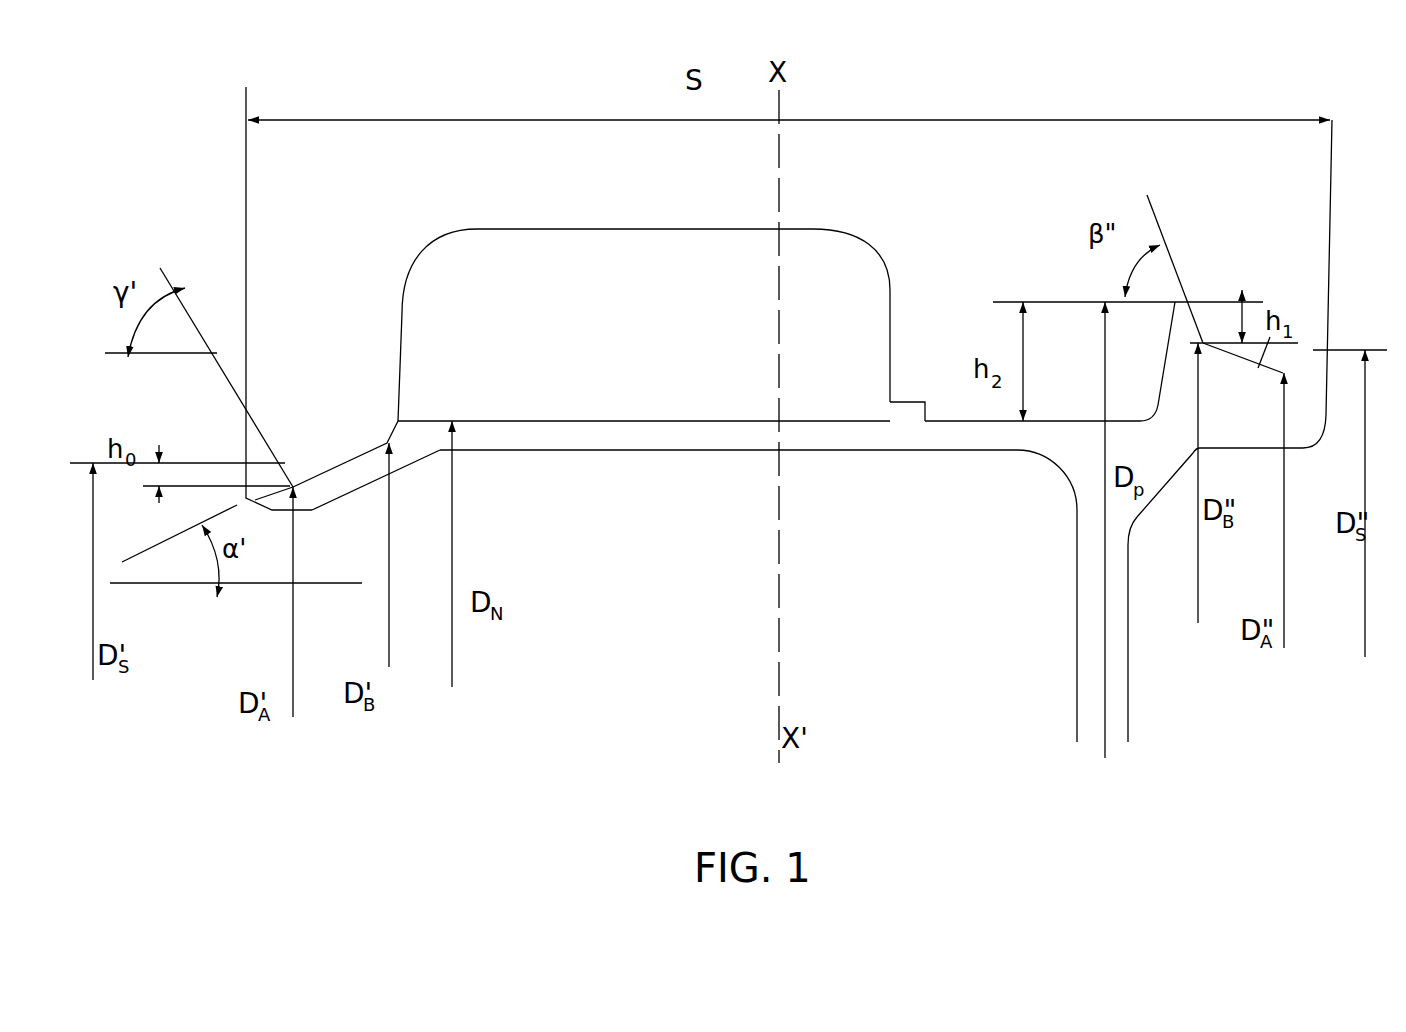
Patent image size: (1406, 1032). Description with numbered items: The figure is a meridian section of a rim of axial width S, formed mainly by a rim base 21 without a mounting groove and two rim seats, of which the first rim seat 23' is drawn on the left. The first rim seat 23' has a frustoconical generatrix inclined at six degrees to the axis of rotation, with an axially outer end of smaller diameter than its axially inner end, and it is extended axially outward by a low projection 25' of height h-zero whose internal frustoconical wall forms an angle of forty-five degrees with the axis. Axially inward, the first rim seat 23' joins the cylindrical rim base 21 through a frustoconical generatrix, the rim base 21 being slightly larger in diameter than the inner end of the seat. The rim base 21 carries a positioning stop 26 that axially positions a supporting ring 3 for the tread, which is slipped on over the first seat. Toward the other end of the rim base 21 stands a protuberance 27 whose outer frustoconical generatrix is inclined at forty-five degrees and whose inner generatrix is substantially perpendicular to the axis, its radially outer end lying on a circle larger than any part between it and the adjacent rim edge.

The supporting ring 3 is at (672, 277).
The rim base 21 is at (644, 437).
The first rim seat 23' is at (366, 423).
The first projection 25' is at (287, 452).
The positioning stop 26 is at (906, 410).
The protuberance 27 is at (1183, 332).